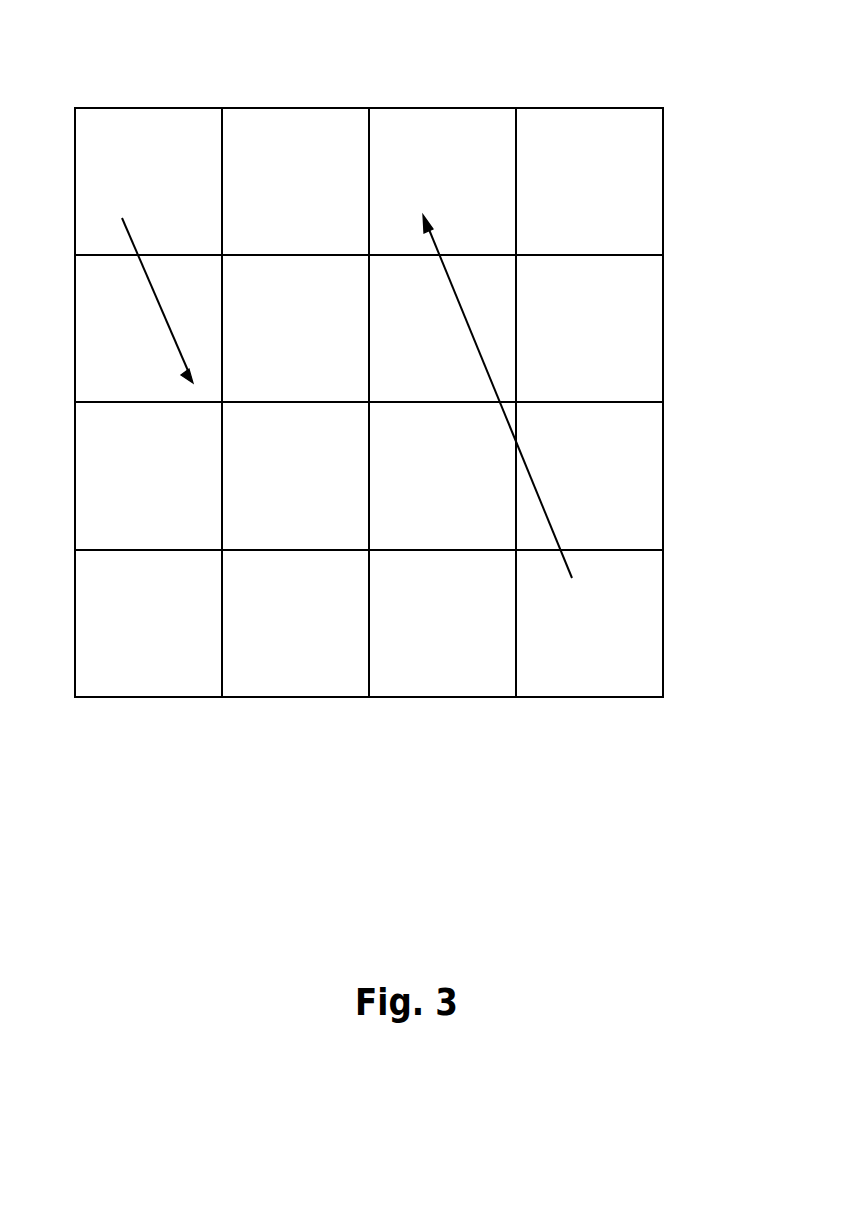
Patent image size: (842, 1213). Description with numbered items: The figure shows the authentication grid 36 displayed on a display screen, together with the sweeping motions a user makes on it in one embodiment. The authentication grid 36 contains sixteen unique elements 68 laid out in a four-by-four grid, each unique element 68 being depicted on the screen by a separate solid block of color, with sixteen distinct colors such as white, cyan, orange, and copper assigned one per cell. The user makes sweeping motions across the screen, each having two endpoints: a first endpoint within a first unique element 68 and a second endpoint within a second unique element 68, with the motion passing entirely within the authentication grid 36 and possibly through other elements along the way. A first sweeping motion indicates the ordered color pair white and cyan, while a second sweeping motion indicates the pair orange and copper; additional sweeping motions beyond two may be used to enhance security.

The authentication grid 36 is at (663, 108).
The unique elements 68 is at (110, 89).